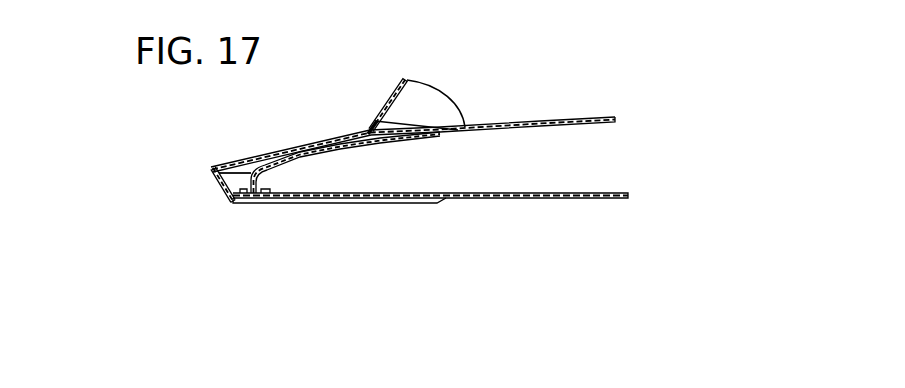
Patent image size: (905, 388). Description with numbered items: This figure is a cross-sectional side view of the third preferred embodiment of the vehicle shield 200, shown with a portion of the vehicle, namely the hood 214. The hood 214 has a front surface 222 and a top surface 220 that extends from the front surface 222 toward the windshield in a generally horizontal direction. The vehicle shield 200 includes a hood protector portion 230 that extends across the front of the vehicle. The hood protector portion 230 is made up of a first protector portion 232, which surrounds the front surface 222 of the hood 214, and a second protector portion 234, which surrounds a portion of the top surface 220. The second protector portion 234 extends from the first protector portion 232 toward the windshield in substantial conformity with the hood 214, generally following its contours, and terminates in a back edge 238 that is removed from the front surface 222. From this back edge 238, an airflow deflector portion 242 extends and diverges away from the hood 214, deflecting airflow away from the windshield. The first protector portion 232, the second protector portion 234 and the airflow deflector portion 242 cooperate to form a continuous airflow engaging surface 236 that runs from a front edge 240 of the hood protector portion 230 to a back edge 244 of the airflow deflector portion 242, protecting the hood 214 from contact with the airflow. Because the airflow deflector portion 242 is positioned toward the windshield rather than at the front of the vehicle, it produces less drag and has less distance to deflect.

The vehicle shield 200 is at (195, 157).
The hood 214 is at (526, 198).
The top surface 220 is at (302, 150).
The front surface 222 is at (228, 184).
The hood protector portion 230 is at (211, 167).
The first protector portion 232 is at (230, 199).
The second protector portion 234 is at (266, 152).
The continuous airflow engaging surface 236 is at (252, 156).
The back edge 238 is at (369, 124).
The front edge 240 is at (232, 205).
The airflow deflector portion 242 is at (390, 86).
The back edge 244 is at (421, 83).